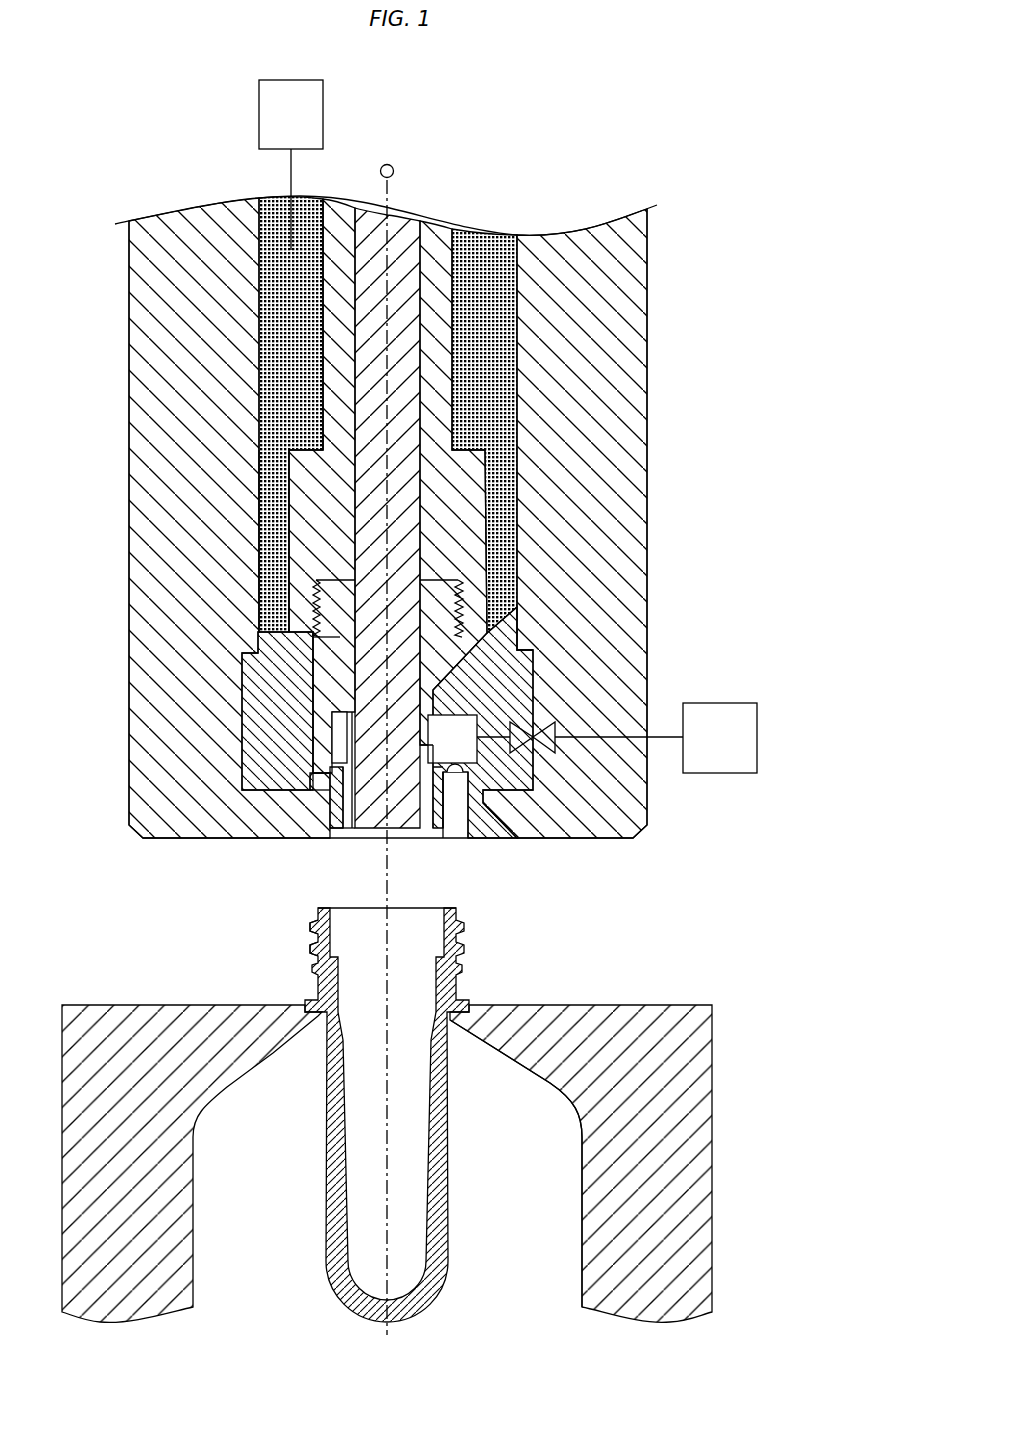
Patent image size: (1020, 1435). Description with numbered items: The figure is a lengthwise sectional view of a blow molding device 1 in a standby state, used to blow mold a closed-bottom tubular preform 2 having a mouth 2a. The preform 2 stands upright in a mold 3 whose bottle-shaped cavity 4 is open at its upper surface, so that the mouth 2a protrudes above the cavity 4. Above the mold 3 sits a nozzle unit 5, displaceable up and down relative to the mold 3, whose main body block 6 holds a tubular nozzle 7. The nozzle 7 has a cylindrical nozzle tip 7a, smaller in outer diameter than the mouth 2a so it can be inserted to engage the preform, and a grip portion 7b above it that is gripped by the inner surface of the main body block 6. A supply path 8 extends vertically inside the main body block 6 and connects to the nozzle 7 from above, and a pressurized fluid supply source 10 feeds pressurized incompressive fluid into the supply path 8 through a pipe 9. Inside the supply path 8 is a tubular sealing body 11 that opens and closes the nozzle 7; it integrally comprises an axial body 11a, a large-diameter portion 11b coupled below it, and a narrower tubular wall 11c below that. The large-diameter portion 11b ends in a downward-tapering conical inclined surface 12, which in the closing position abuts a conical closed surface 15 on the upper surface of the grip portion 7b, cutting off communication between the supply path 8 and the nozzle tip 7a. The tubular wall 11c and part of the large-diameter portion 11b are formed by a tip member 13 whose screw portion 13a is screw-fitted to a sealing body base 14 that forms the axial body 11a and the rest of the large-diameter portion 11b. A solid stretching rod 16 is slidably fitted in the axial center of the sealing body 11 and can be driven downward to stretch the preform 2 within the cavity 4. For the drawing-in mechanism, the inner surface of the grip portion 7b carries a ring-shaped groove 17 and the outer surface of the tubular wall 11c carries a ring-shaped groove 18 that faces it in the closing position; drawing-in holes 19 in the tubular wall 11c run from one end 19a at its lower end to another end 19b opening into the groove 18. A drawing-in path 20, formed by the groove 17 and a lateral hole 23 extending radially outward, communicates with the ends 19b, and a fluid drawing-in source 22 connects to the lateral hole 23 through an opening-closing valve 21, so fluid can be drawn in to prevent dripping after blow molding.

The blow molding device 1 is at (719, 160).
The preform 2 is at (490, 958).
The mouth 2a is at (462, 927).
The mold 3 is at (728, 1105).
The cavity 4 is at (582, 1207).
The nozzle unit 5 is at (656, 430).
The main body block 6 is at (612, 527).
The nozzle 7 is at (540, 658).
The nozzle tip 7a is at (451, 822).
The grip portion 7b is at (494, 660).
The supply path 8 is at (489, 313).
The pipe 9 is at (290, 173).
The pressurized fluid supply source 10 is at (291, 165).
The sealing body 11 is at (282, 488).
The axial body 11a is at (340, 340).
The large-diameter portion 11b is at (300, 528).
The tubular wall 11c is at (335, 805).
The inclined surface 12 is at (328, 685).
The tip member 13 is at (340, 725).
The screw portion 13a is at (312, 592).
The sealing body base 14 is at (290, 510).
The closed surface 15 is at (320, 655).
The stretching rod 16 is at (357, 415).
The ring-shaped groove 17 is at (318, 790).
The ring-shaped groove 18 is at (338, 740).
The drawing-in holes 19 is at (338, 800).
The one end 19a is at (352, 830).
The other end 19b is at (322, 780).
The drawing-in path 20 is at (442, 790).
The opening-closing valve 21 is at (548, 750).
The fluid drawing-in source 22 is at (617, 733).
The lateral hole 23 is at (458, 745).